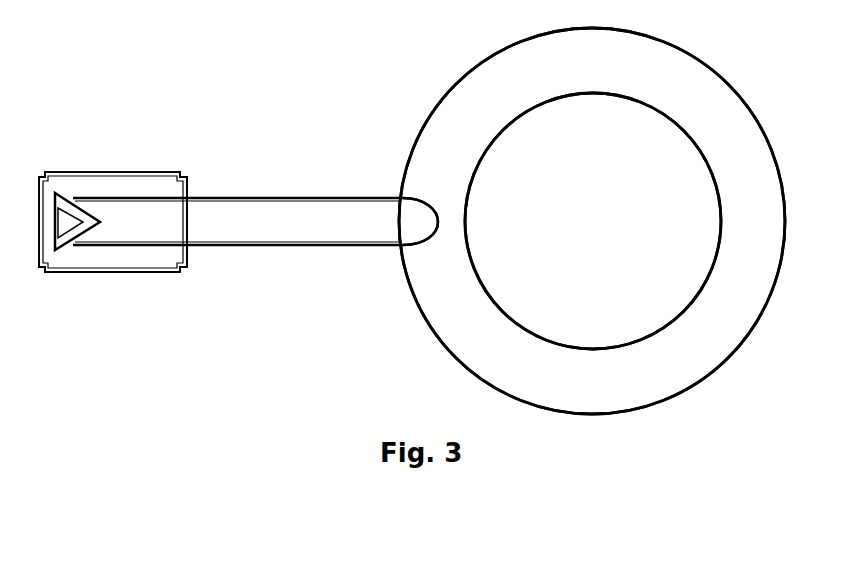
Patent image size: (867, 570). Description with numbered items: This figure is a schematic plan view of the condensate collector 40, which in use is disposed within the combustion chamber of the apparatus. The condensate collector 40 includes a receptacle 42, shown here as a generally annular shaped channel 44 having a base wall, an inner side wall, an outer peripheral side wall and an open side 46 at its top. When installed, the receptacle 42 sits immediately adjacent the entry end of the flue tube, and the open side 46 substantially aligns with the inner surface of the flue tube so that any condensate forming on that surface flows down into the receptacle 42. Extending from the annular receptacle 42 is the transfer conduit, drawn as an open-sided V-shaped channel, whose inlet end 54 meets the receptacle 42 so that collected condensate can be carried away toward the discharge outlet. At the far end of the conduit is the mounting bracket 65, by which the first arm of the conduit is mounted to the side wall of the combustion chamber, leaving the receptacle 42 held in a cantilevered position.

The condensate collector 40 is at (284, 152).
The receptacle 42 is at (493, 390).
The channel 44 is at (695, 387).
The open side 46 is at (593, 221).
The inlet end 54 is at (408, 232).
The mounting bracket 65 is at (102, 184).